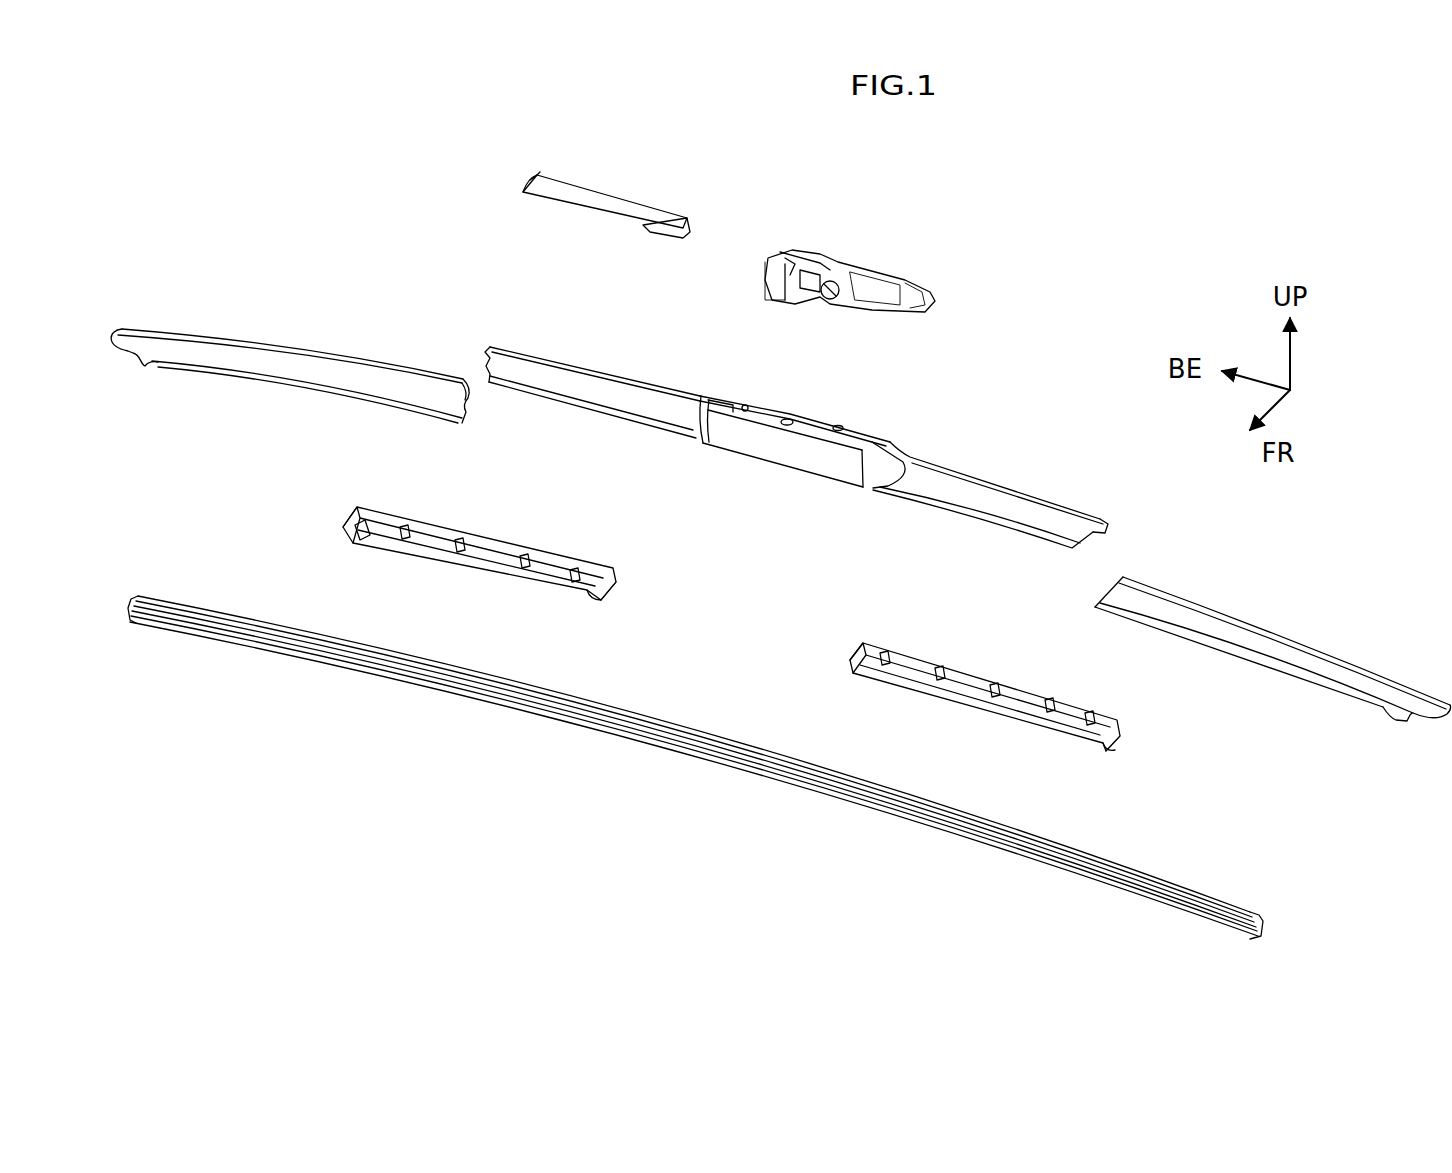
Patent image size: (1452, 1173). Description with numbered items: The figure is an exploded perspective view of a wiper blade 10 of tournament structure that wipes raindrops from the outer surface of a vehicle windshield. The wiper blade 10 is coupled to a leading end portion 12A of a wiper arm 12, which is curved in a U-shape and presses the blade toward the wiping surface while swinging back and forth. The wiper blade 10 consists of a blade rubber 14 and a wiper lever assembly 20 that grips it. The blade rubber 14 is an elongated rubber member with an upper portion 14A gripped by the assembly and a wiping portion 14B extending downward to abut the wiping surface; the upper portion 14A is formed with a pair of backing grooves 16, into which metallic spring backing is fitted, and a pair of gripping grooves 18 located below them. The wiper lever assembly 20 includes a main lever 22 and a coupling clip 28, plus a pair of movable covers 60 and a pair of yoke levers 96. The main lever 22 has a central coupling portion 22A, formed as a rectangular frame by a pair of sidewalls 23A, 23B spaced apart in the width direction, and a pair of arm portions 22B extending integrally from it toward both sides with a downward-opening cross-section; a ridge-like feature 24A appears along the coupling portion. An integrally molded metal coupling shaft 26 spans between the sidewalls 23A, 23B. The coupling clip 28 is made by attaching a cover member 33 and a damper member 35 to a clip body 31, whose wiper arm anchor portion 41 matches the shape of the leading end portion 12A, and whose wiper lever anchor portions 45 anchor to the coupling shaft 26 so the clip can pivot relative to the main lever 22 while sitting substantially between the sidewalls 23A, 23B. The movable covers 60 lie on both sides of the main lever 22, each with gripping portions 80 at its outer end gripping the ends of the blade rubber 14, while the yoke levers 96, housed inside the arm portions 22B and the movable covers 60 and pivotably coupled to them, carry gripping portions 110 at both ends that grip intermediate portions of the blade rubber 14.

The wiper blade 10 is at (596, 834).
The wiper arm 12 is at (614, 164).
The leading end portion 12A is at (676, 218).
The blade rubber 14 is at (695, 791).
The upper portion 14A is at (618, 712).
The wiping portion 14B is at (715, 755).
The backing grooves 16 is at (1226, 930).
The gripping grooves 18 is at (1248, 936).
The wiper lever assembly 20 is at (1082, 456).
The main lever 22 is at (796, 413).
The coupling portion 22A is at (830, 465).
The arm portions 22B is at (518, 348).
The sidewall 23A is at (775, 450).
The sidewall 23B is at (808, 418).
The ridge of frame 24A is at (855, 426).
The coupling shaft 26 is at (778, 418).
The coupling clip 28 is at (867, 243).
The clip body 31 is at (820, 245).
The cover member 33 is at (875, 272).
The damper member 35 is at (768, 272).
The wiper arm anchor portion 41 is at (783, 252).
The wiper lever anchor portion 45 is at (828, 298).
The movable covers 60 is at (290, 357).
The gripping portions 80 is at (148, 367).
The yoke levers 96 is at (472, 542).
The gripping portions 110 is at (348, 520).